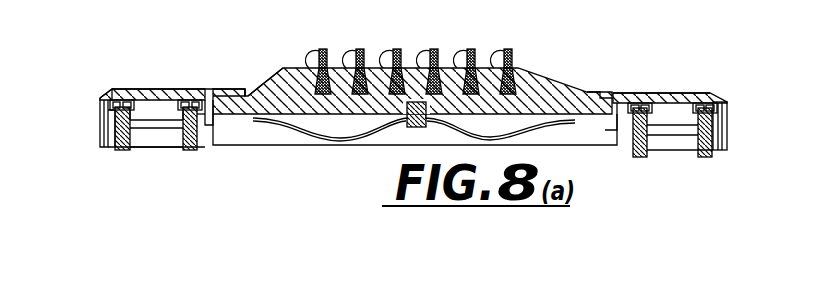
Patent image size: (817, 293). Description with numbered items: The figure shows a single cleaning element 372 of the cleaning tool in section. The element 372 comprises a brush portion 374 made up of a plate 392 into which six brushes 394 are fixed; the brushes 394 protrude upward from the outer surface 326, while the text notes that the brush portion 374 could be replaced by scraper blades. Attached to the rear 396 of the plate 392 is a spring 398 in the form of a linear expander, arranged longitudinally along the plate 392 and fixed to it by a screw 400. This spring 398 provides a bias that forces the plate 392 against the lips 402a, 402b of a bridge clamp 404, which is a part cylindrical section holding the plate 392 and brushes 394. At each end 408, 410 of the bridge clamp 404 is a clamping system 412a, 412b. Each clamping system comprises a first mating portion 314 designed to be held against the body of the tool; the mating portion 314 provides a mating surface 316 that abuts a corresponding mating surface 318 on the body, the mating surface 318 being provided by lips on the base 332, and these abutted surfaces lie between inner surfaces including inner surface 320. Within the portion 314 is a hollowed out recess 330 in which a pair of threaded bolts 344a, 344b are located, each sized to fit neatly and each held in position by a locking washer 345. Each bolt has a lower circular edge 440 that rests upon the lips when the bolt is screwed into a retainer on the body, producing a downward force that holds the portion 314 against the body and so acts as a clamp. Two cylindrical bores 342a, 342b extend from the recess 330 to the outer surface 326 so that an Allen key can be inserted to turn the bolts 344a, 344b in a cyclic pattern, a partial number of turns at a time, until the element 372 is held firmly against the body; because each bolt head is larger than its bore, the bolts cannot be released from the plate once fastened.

The first mating portion 314 is at (103, 92).
The mating surface 316 is at (138, 128).
The mating surface 318 is at (153, 128).
The inner surface 320 is at (171, 135).
The outer surface 326 is at (147, 92).
The recess 330 is at (158, 113).
The base 332 is at (112, 132).
The cylindrical bore 342a is at (125, 92).
The cylindrical bore 342b is at (193, 92).
The bolt 344a is at (127, 150).
The bolt 344b is at (200, 150).
The locking washer 345 is at (103, 118).
The cleaning element 372 is at (703, 60).
The brush portion 374 is at (305, 83).
The plate 392 is at (273, 90).
The brushes 394 is at (395, 53).
The rear of the plate 396 is at (330, 118).
The spring 398 is at (530, 122).
The screw 400 is at (408, 128).
The lip 402a is at (230, 88).
The lip 402b is at (590, 92).
The bridge clamp 404 is at (670, 93).
The end of the clamp 408 is at (103, 128).
The end of the clamp 410 is at (730, 118).
The clamping system 412a is at (138, 77).
The clamping system 412b is at (690, 89).
The lower circular edge 440 is at (207, 125).